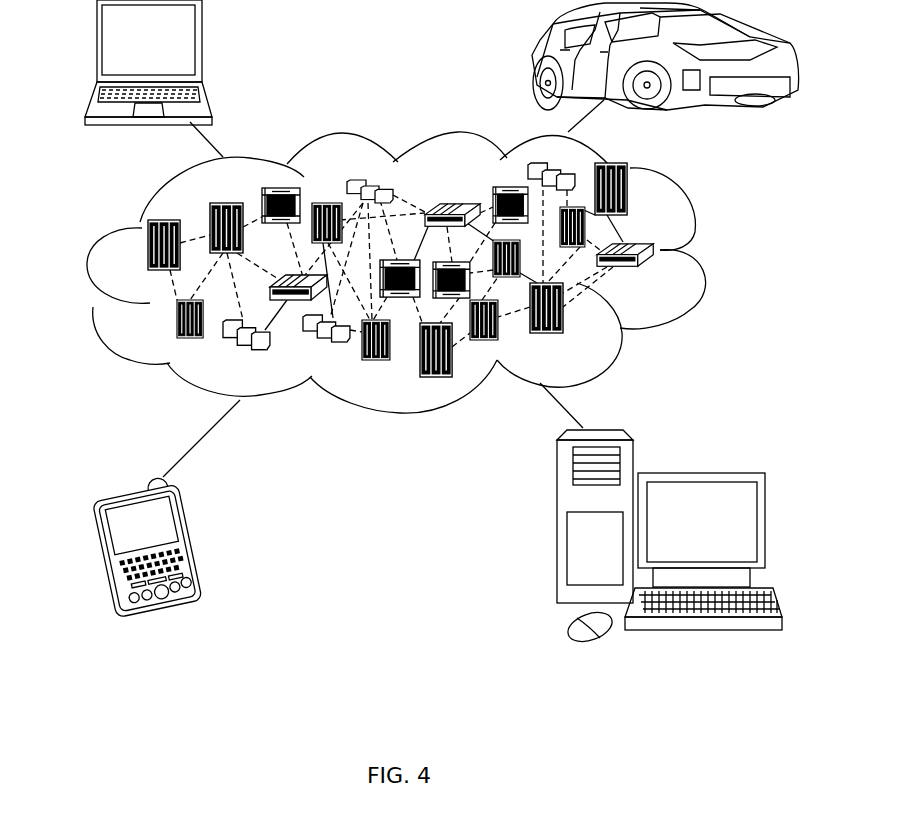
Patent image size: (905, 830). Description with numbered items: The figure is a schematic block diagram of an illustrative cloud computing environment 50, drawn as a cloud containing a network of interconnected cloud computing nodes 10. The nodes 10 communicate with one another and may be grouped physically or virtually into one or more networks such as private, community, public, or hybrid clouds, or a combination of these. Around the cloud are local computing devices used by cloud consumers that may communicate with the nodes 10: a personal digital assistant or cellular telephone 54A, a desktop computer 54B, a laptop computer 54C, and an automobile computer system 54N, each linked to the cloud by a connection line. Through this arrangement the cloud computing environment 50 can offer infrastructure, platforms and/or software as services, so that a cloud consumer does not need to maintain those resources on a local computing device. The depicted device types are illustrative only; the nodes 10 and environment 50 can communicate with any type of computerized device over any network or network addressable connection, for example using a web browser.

The cloud computing node 10 is at (662, 281).
The cloud computing environment 50 is at (700, 254).
The personal digital assistant or cellular telephone 54A is at (193, 543).
The desktop computer 54B is at (700, 472).
The laptop computer 54C is at (202, 46).
The automobile computer system 54N is at (533, 56).